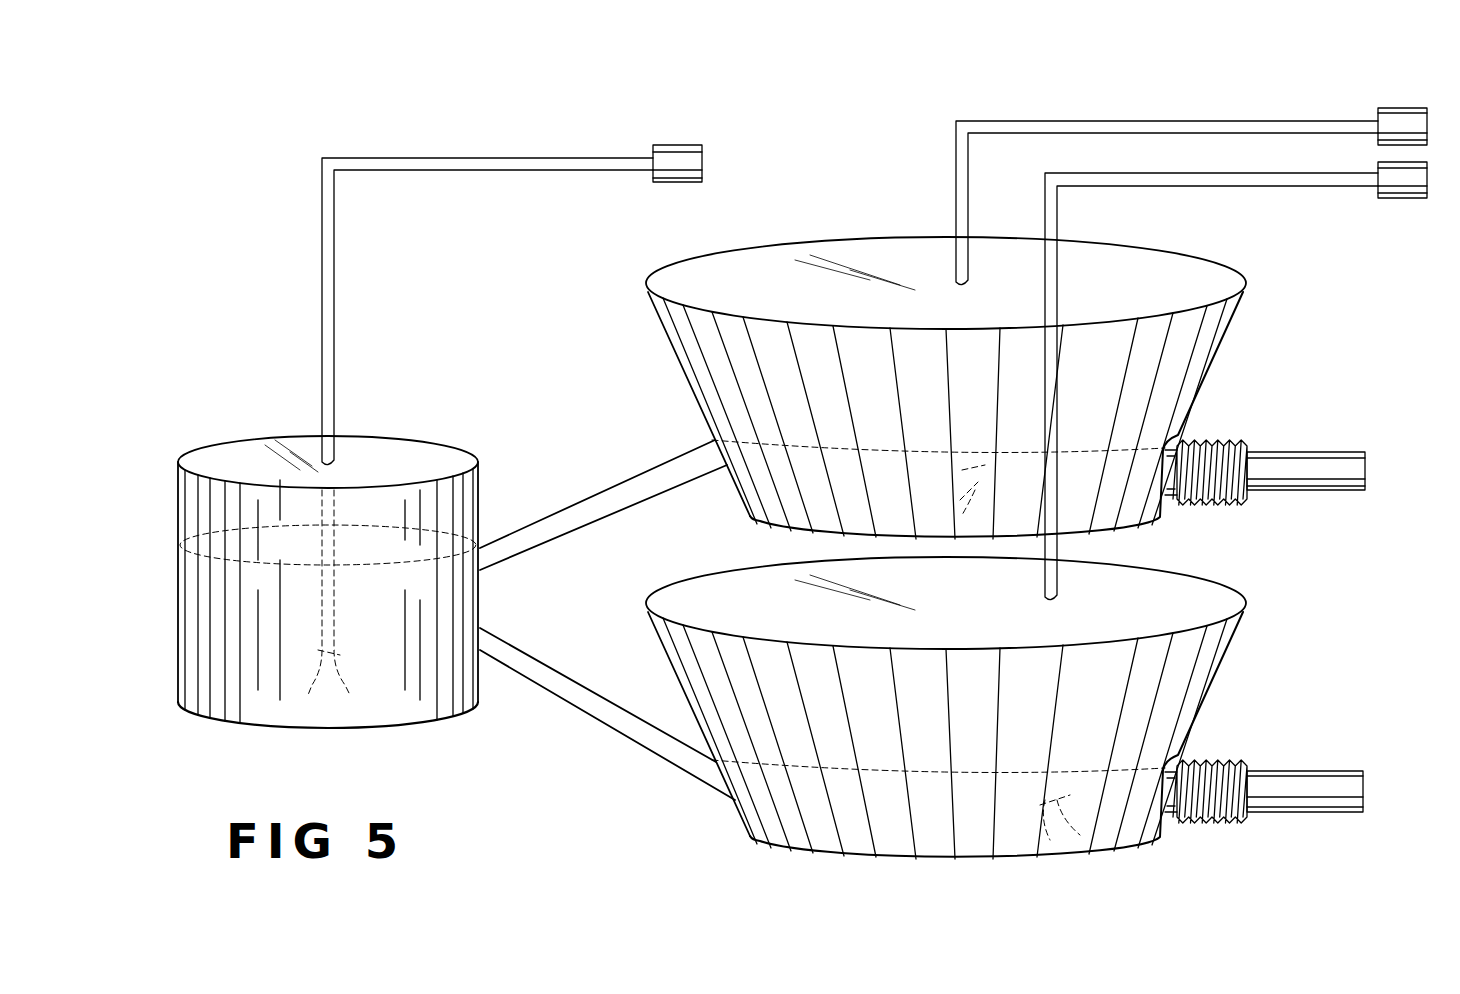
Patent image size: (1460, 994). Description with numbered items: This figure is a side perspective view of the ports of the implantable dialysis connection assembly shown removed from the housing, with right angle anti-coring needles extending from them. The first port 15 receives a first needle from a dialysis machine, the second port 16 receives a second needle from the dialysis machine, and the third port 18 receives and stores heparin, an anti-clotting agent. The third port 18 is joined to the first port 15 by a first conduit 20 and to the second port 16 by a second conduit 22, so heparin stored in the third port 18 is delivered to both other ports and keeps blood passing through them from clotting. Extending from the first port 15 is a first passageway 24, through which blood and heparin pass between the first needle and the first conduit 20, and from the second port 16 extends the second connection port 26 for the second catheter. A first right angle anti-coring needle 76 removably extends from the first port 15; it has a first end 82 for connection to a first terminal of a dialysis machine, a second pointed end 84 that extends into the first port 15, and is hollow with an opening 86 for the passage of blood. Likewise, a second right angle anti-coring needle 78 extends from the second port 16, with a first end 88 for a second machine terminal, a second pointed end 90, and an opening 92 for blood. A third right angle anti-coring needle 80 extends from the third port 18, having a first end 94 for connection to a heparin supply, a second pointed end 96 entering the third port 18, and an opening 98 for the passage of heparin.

The first port 15 is at (1212, 278).
The second port 16 is at (1205, 597).
The third port 18 is at (425, 447).
The first conduit 20 is at (557, 505).
The second conduit 22 is at (563, 672).
The first passageway 24 is at (1322, 462).
The first catheter 26 is at (1262, 770).
The first right angle anti-coring needle 76 is at (1158, 122).
The second right angle anti-coring needle 78 is at (1158, 178).
The third right angle anti-coring needle 80 is at (490, 156).
The first end 82 is at (1412, 118).
The second pointed end 84 is at (978, 520).
The opening 86 is at (975, 490).
The first end 88 is at (1413, 190).
The second pointed end 90 is at (1052, 838).
The opening 92 is at (1055, 808).
The first end 94 is at (690, 152).
The second pointed end 96 is at (330, 682).
The opening 98 is at (332, 656).